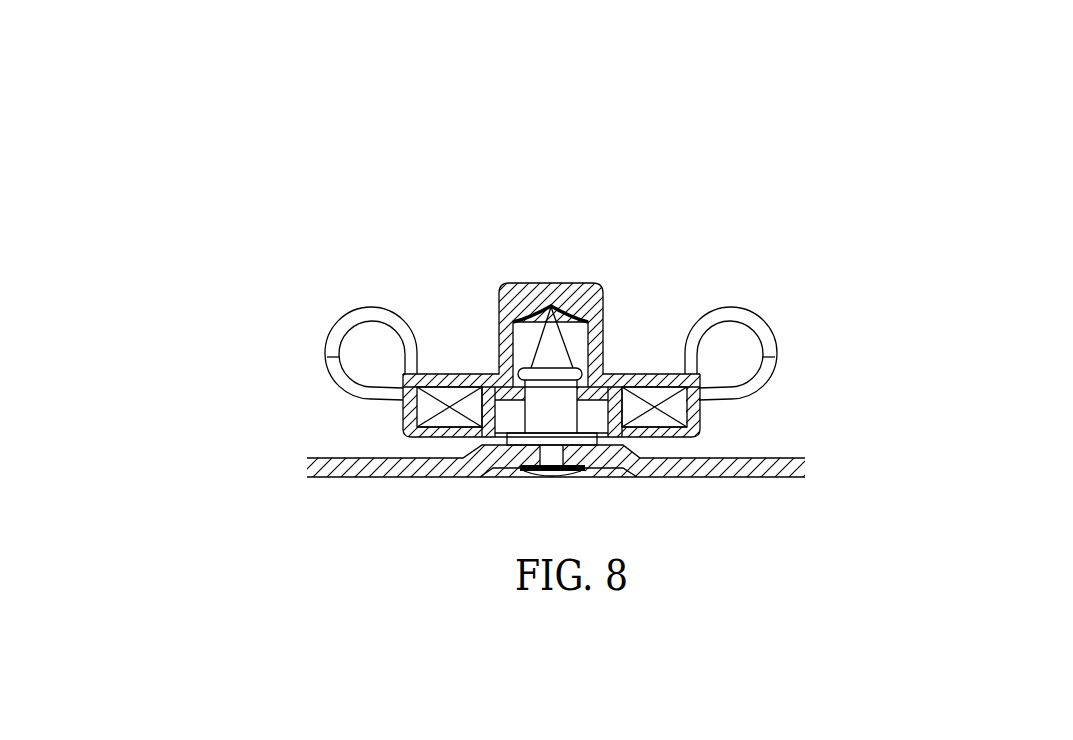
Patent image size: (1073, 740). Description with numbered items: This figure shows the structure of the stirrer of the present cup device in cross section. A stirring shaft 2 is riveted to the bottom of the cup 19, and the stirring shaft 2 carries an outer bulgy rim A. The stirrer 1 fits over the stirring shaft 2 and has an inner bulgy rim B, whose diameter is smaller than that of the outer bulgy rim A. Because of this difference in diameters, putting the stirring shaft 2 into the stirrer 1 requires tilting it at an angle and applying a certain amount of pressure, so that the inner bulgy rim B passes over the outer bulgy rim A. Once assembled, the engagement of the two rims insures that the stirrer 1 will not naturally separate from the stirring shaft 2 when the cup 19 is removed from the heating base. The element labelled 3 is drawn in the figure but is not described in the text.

The stirrer 1 is at (500, 283).
The stirring shaft 2 is at (548, 391).
The housing 3 is at (425, 404).
The outer bulgy rim A is at (591, 371).
The inner bulgy rim B is at (575, 392).
The cup 19 is at (683, 467).